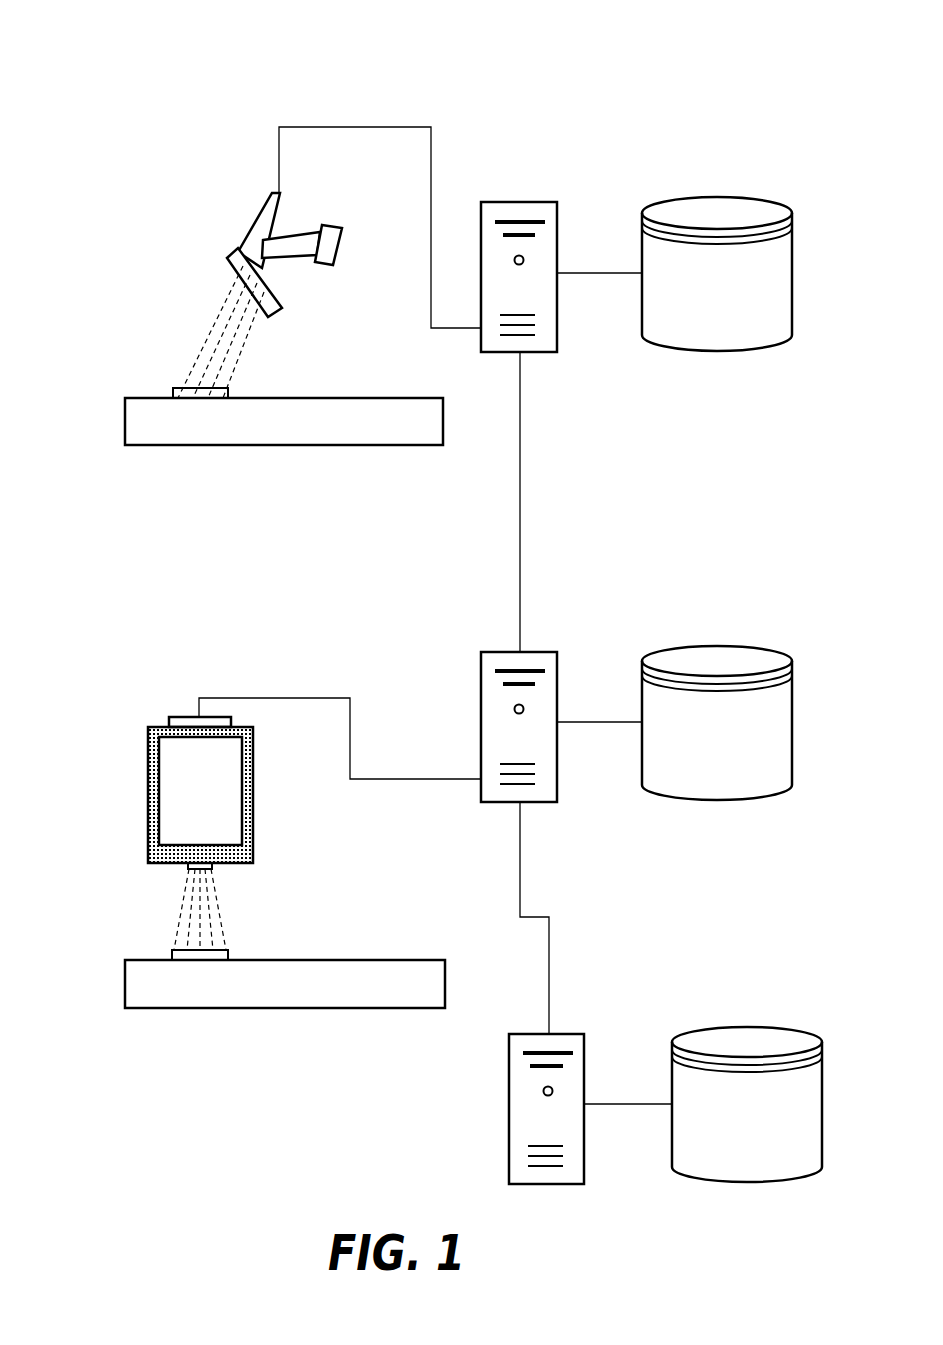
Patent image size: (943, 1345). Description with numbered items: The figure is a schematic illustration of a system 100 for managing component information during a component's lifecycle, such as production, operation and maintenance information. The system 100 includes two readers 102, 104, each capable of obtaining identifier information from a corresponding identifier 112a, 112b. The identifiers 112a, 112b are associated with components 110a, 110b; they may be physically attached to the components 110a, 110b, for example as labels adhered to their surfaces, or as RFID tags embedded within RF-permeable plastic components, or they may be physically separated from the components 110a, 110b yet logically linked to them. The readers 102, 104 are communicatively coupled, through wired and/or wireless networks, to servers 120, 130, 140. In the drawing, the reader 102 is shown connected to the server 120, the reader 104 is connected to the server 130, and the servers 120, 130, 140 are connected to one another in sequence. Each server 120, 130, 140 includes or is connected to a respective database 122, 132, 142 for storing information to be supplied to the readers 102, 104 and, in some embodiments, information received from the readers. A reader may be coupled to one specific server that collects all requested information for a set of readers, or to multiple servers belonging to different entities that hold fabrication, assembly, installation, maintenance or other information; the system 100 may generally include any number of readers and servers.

The system 100 is at (677, 87).
The reader 102 is at (225, 258).
The reader 104 is at (149, 727).
The component 110a is at (284, 421).
The component 110b is at (285, 984).
The identifier 112a is at (173, 390).
The identifier 112b is at (172, 955).
The server 120 is at (520, 200).
The database 122 is at (717, 274).
The server 130 is at (548, 650).
The database 132 is at (717, 723).
The server 140 is at (577, 1033).
The database 142 is at (747, 1104).